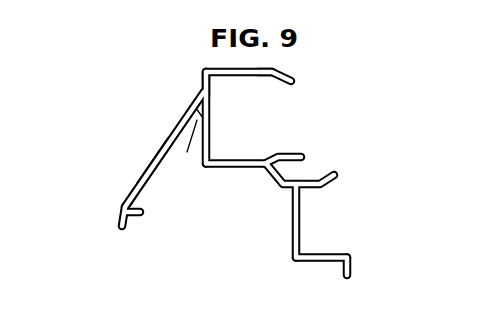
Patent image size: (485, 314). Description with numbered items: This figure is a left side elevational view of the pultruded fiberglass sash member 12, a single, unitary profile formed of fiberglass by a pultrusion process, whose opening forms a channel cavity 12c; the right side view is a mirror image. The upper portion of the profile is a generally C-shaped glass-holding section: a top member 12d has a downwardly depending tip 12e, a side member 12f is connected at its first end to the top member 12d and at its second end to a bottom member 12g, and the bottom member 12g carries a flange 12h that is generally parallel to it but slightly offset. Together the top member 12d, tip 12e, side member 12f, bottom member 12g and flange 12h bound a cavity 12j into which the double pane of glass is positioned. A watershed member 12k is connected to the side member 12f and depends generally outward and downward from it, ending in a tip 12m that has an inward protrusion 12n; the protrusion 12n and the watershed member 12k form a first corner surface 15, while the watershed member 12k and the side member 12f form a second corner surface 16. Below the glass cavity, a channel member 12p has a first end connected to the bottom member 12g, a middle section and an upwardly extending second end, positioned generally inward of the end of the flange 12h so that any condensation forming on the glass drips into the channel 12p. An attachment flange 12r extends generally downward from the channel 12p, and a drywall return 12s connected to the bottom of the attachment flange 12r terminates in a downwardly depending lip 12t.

The pultruded fiberglass sash member 12 is at (199, 75).
The channel cavity 12c is at (172, 187).
The top member 12d is at (245, 78).
The tip 12e is at (291, 72).
The side member 12f is at (212, 134).
The bottom member 12g is at (233, 169).
The flange 12h is at (305, 148).
The cavity 12j is at (279, 91).
The watershed member 12k is at (162, 141).
The tip 12m is at (118, 217).
The inward protrusion 12n is at (138, 219).
The channel member 12p is at (334, 176).
The attachment flange 12r is at (300, 223).
The drywall return 12s is at (320, 263).
The lip 12t is at (356, 263).
The first corner surface 15 is at (129, 204).
The second corner surface 16 is at (188, 144).